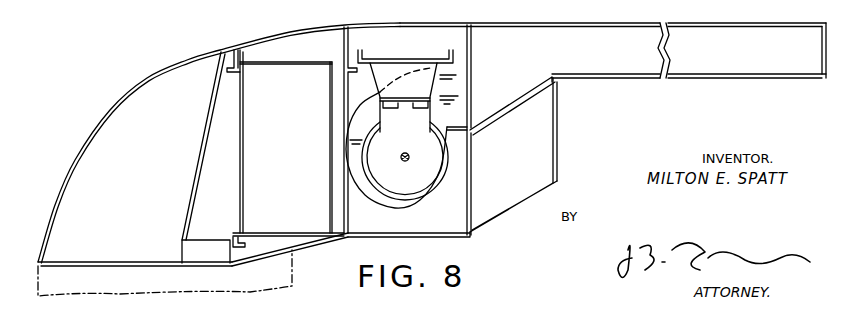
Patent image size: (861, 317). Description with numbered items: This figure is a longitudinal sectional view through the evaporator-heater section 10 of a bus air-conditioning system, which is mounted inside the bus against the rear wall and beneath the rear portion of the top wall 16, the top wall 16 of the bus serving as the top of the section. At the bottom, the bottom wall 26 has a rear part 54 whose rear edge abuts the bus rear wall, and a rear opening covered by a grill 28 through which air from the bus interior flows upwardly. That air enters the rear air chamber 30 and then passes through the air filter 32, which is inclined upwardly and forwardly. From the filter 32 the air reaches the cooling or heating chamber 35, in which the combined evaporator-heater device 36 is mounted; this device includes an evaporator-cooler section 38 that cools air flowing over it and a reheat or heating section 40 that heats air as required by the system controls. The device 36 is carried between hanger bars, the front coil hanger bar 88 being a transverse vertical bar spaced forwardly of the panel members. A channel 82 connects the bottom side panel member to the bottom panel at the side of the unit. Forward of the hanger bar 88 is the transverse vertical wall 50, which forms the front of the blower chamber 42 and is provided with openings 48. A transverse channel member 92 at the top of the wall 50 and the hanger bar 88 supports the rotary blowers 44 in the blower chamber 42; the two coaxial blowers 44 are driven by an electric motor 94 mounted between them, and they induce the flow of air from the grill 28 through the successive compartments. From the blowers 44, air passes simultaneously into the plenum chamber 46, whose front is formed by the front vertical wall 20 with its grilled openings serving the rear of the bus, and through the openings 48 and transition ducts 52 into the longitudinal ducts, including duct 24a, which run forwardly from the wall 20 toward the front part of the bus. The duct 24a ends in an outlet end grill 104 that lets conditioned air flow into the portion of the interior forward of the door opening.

The evaporator-heater section 10 is at (509, 231).
The top wall 16 is at (47, 222).
The front vertical wall 20 is at (558, 134).
The duct 24a is at (710, 37).
The bottom wall 26 is at (302, 257).
The grill 28 is at (112, 260).
The rear air chamber 30 is at (128, 194).
The air filter 32 is at (203, 128).
The cooling or heating chamber 35 is at (229, 192).
The combined air conditioning evaporator-heater device 36 is at (268, 53).
The evaporator-cooler section 38 is at (285, 60).
The air conditioning reheat or heating section 40 is at (335, 60).
The blower chamber 42 is at (423, 230).
The coaxial blowers 44 is at (435, 197).
The plenum chamber 46 is at (517, 179).
The openings 48 is at (473, 86).
The front vertical wall 50 is at (473, 50).
The transition ducts 52 is at (531, 201).
The rear part 54 is at (60, 266).
The channel 82 is at (197, 240).
The front coil hanger bar 88 is at (373, 20).
The transverse channel member 92 is at (365, 56).
The electric motor 94 is at (382, 190).
The outlet end grill 104 is at (827, 44).